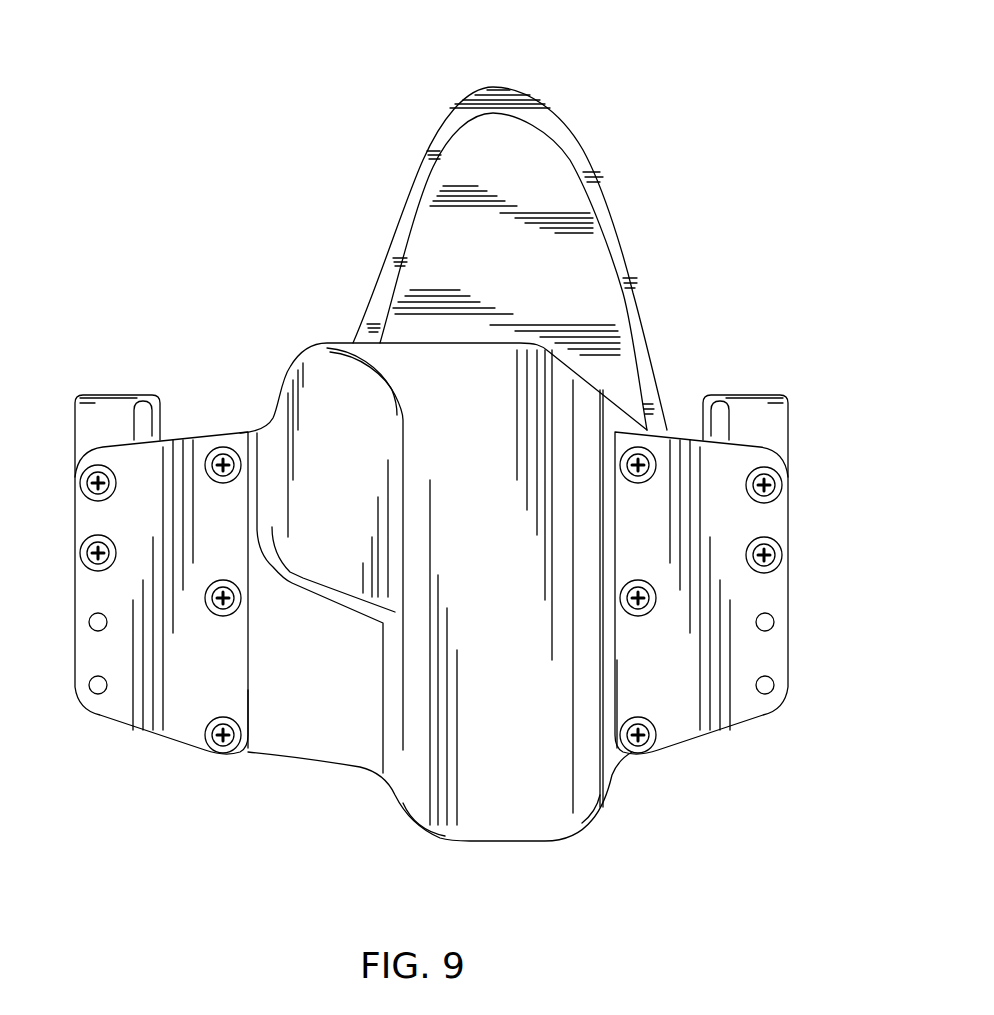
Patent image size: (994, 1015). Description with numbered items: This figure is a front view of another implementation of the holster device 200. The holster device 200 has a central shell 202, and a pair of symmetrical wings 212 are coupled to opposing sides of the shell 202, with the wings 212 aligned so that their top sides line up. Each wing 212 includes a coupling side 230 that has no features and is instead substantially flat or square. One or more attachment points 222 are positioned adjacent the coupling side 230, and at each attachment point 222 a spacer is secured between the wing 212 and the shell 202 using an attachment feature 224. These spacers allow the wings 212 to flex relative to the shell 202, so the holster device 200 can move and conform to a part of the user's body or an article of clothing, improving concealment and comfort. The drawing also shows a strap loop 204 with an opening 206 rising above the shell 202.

The holster device 200 is at (662, 77).
The shell 202 is at (587, 402).
The retention strap loop 204 is at (535, 147).
The strap opening 206 is at (555, 315).
The wings 212 is at (123, 718).
The attachment points 222 is at (207, 750).
The attachment feature 224 is at (223, 457).
The coupling side 230 is at (250, 697).